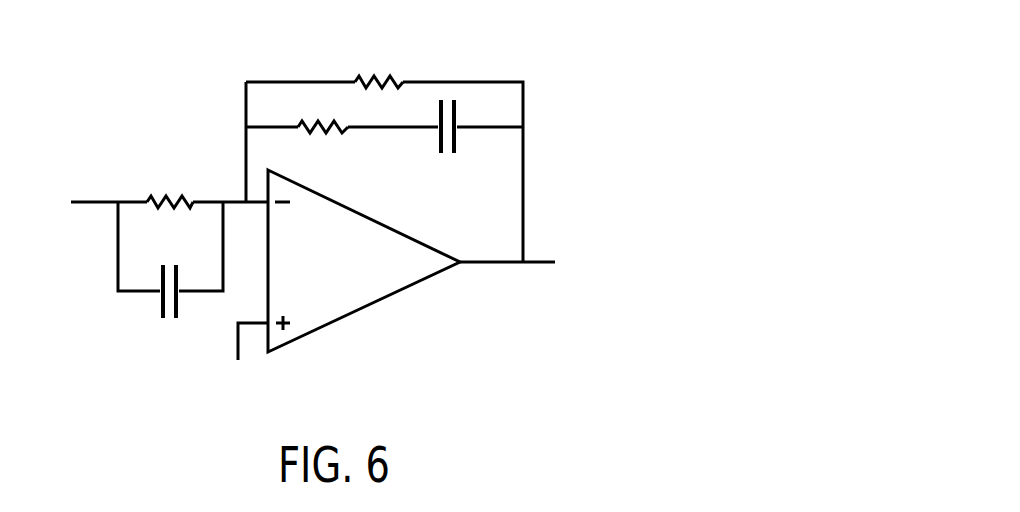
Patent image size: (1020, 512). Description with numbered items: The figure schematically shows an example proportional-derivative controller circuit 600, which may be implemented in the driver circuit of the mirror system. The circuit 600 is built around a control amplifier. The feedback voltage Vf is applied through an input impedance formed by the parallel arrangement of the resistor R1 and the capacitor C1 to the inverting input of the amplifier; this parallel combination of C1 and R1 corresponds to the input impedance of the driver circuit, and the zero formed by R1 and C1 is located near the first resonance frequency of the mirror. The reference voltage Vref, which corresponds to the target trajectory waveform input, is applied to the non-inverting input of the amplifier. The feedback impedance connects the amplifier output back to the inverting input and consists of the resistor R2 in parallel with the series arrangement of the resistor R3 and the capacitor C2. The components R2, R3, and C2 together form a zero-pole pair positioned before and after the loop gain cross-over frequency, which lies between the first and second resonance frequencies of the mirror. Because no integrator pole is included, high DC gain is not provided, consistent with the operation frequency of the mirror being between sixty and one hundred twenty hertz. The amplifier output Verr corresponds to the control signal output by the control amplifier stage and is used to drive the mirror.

The PD controller circuit 600 is at (376, 198).
The input resistor R1 is at (170, 223).
The input capacitor C1 is at (170, 280).
The feedback resistor R2 is at (379, 103).
The feedback resistor R3 is at (323, 148).
The feedback capacitor C2 is at (448, 147).
The feedback voltage input Vf is at (107, 186).
The reference voltage Vref is at (240, 357).
The error voltage output Verr is at (525, 255).